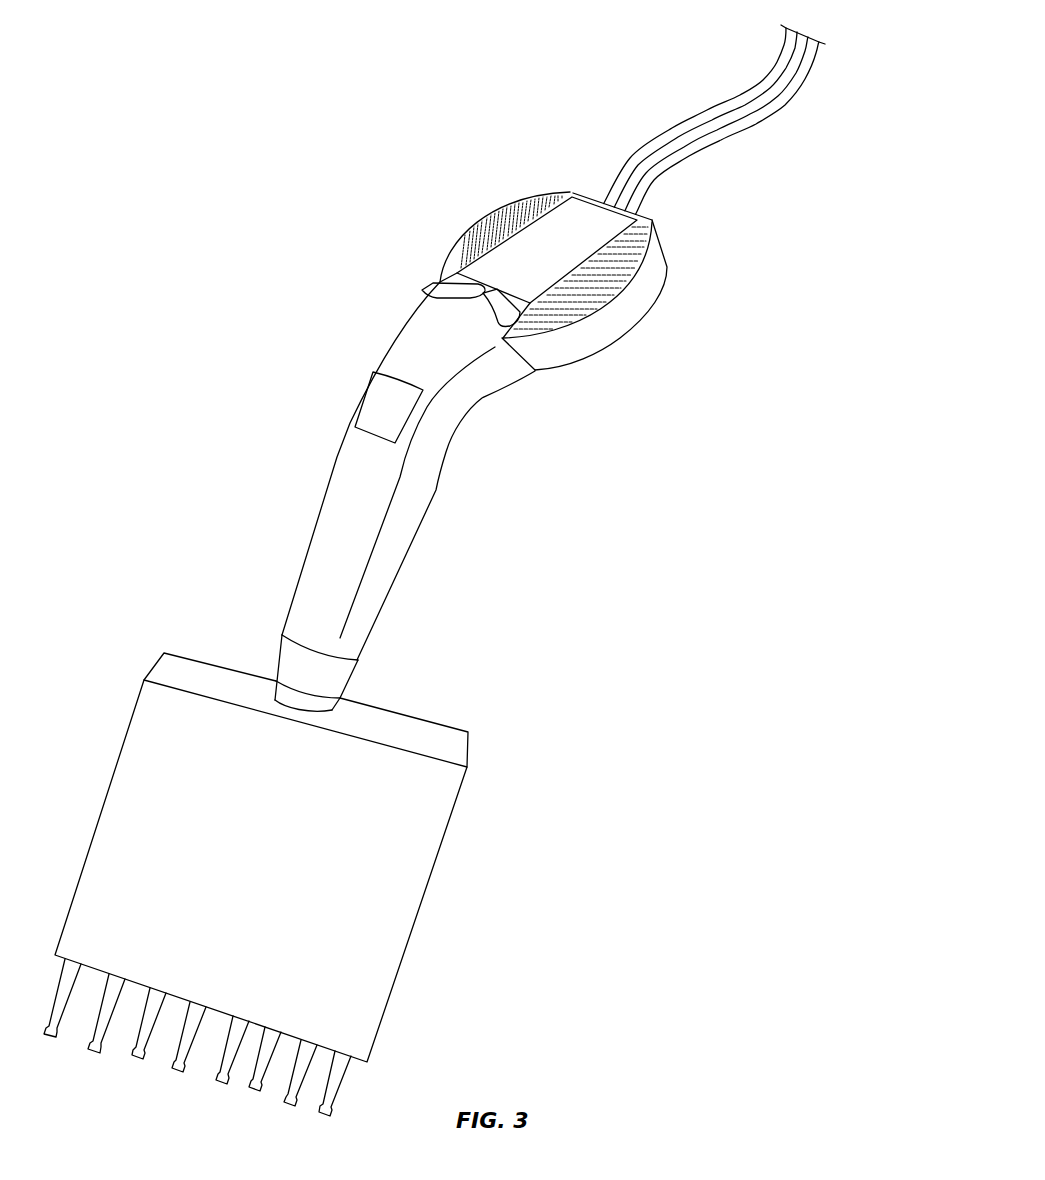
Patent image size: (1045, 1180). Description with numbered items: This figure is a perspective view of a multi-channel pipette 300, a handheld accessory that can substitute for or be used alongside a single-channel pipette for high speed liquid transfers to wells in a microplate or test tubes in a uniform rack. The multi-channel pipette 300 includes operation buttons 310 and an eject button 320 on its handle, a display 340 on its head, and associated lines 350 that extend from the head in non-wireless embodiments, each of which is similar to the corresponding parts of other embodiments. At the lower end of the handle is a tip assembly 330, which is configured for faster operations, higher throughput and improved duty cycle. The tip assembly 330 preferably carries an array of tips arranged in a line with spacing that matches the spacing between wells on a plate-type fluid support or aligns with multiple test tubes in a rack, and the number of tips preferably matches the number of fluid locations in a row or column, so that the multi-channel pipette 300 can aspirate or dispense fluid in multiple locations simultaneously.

The multi-channel pipette 300 is at (376, 113).
The operation buttons 310 is at (438, 284).
The eject button 320 is at (366, 382).
The tip assembly 330 is at (140, 689).
The display 340 is at (571, 192).
The lines 350 is at (713, 110).